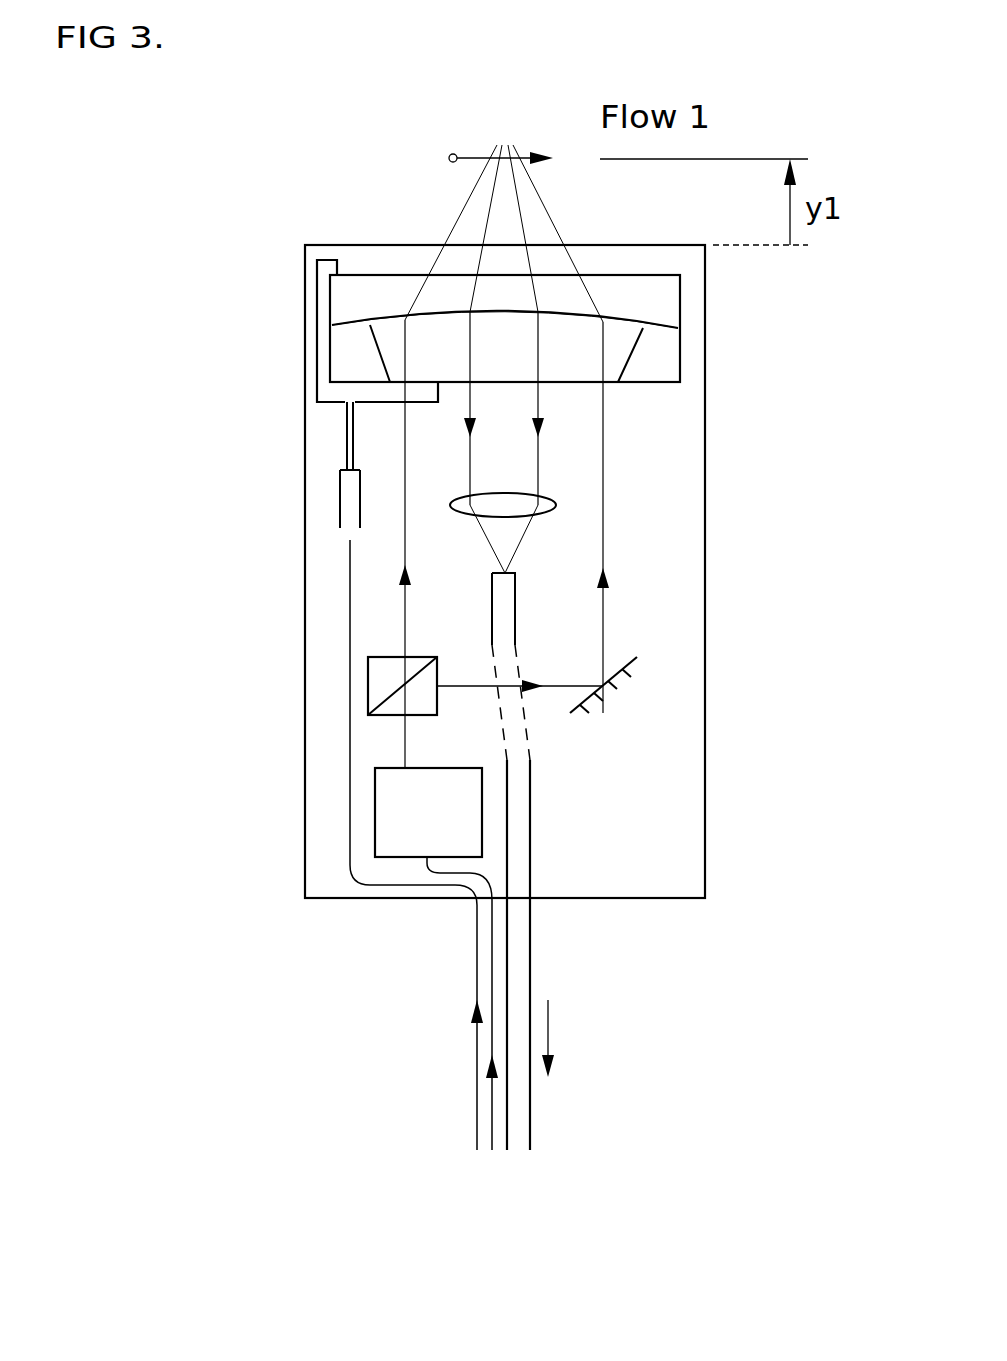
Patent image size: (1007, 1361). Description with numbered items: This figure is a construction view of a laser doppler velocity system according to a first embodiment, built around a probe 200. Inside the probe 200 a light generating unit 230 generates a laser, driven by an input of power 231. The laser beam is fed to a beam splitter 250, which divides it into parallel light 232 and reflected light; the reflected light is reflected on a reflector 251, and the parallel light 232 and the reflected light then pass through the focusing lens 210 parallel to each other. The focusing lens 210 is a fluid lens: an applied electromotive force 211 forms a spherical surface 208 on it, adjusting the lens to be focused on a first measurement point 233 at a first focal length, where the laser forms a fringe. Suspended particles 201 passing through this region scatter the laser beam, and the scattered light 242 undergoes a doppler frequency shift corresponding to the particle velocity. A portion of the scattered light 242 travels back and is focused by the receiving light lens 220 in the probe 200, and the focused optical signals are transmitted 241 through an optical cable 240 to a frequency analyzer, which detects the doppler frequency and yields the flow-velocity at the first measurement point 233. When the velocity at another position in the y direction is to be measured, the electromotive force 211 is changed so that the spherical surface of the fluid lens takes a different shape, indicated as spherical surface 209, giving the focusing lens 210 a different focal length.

The probe 200 is at (305, 432).
The suspended particles 201 is at (461, 160).
The spherical surface 208 is at (445, 305).
The spherical surface of the fluid lens 209 is at (408, 319).
The focusing lens 210 is at (655, 353).
The electromotive force 211 is at (477, 965).
The receiving light lens 220 is at (556, 505).
The light generating unit 230 is at (375, 810).
The input of power 231 is at (492, 1112).
The parallel light 232 is at (403, 612).
The first measurement point 233 is at (505, 158).
The optical cable 240 is at (515, 608).
The transmission of optical signals 241 is at (584, 1038).
The scattered light 242 is at (538, 460).
The beam splitter 250 is at (368, 685).
The reflector 251 is at (607, 697).